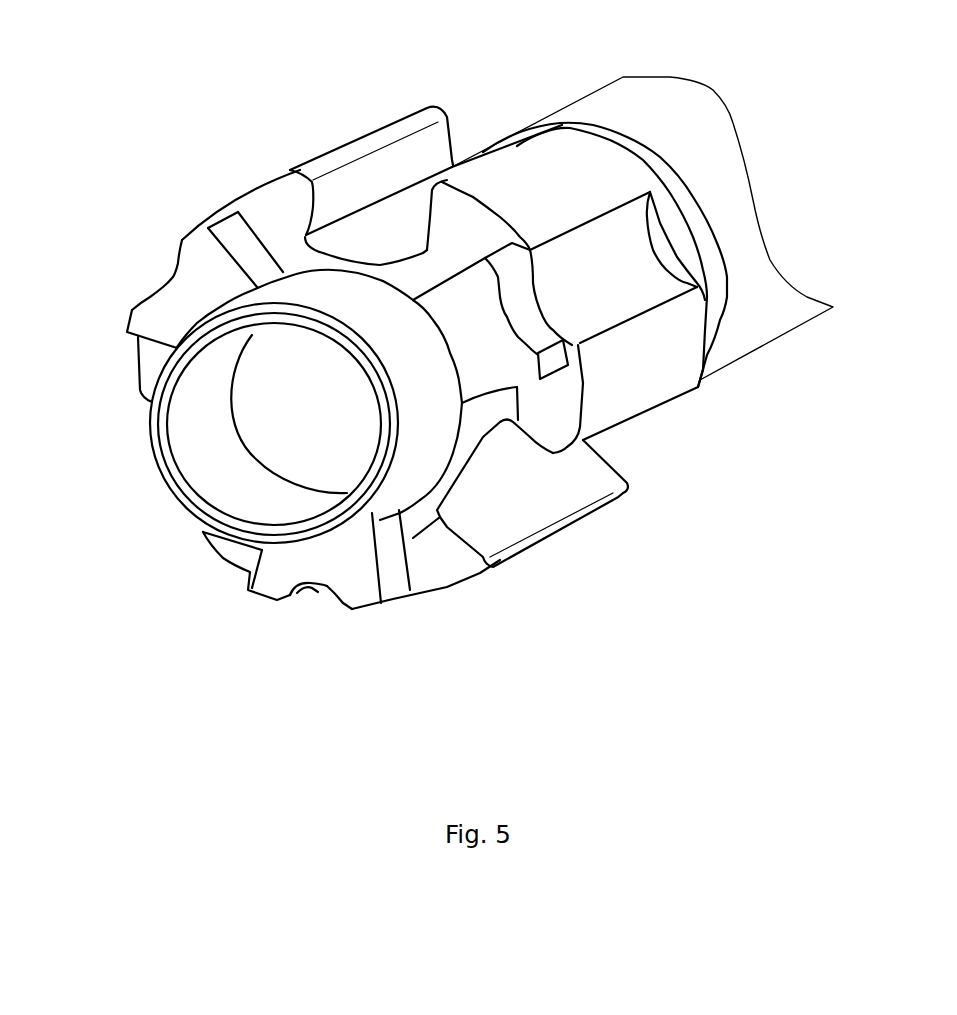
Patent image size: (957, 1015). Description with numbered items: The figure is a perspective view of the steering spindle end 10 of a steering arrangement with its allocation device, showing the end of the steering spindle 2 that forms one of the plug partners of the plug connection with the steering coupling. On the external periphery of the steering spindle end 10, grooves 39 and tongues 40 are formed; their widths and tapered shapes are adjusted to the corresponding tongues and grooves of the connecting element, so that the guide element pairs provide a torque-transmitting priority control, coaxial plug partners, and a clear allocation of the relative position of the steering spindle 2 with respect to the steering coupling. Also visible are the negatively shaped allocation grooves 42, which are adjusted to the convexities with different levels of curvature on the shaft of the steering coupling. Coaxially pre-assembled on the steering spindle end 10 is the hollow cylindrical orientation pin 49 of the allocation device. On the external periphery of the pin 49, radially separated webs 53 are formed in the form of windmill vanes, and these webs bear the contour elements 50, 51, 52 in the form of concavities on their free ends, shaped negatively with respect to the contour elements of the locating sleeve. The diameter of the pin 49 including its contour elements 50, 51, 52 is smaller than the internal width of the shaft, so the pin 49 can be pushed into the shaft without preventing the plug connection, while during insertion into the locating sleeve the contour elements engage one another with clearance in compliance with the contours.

The steering spindle 2 is at (680, 110).
The steering spindle end 10 is at (528, 135).
The grooves 39 is at (380, 213).
The tongues 40 is at (282, 195).
The allocation grooves 42 is at (638, 253).
The orientation pin 49 is at (152, 463).
The contour element 50 is at (165, 280).
The contour element 51 is at (520, 305).
The contour element 52 is at (315, 592).
The webs 53 is at (160, 322).